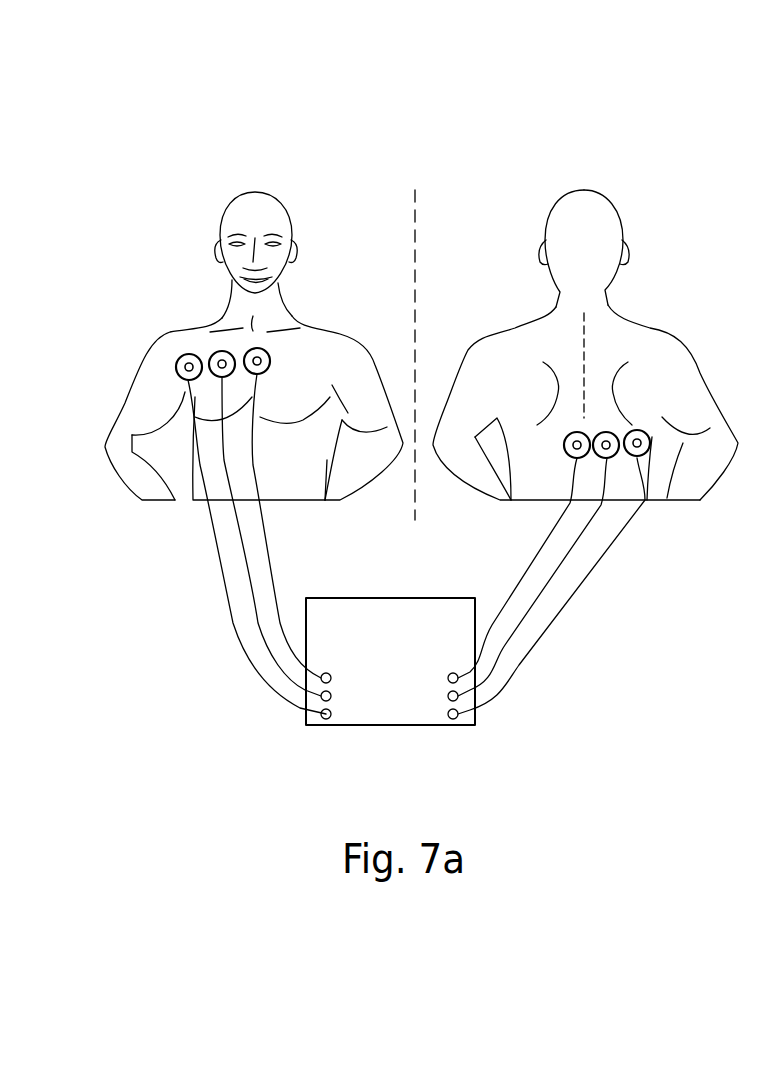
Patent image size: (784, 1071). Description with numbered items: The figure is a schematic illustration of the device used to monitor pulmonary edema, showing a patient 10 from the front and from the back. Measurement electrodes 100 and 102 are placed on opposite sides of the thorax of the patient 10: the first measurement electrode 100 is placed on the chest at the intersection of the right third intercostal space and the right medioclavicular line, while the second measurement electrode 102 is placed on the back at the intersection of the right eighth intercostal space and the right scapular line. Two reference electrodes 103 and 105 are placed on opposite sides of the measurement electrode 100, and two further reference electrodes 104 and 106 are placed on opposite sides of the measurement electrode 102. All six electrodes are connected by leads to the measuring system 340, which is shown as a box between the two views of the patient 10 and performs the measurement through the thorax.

The patient 10 is at (633, 340).
The first measurement electrode 100 is at (212, 356).
The reference electrode 103 is at (186, 353).
The reference electrode 105 is at (247, 350).
The second measurement electrode 102 is at (608, 458).
The reference electrode 104 is at (579, 458).
The reference electrode 106 is at (638, 456).
The measuring system 340 is at (367, 713).